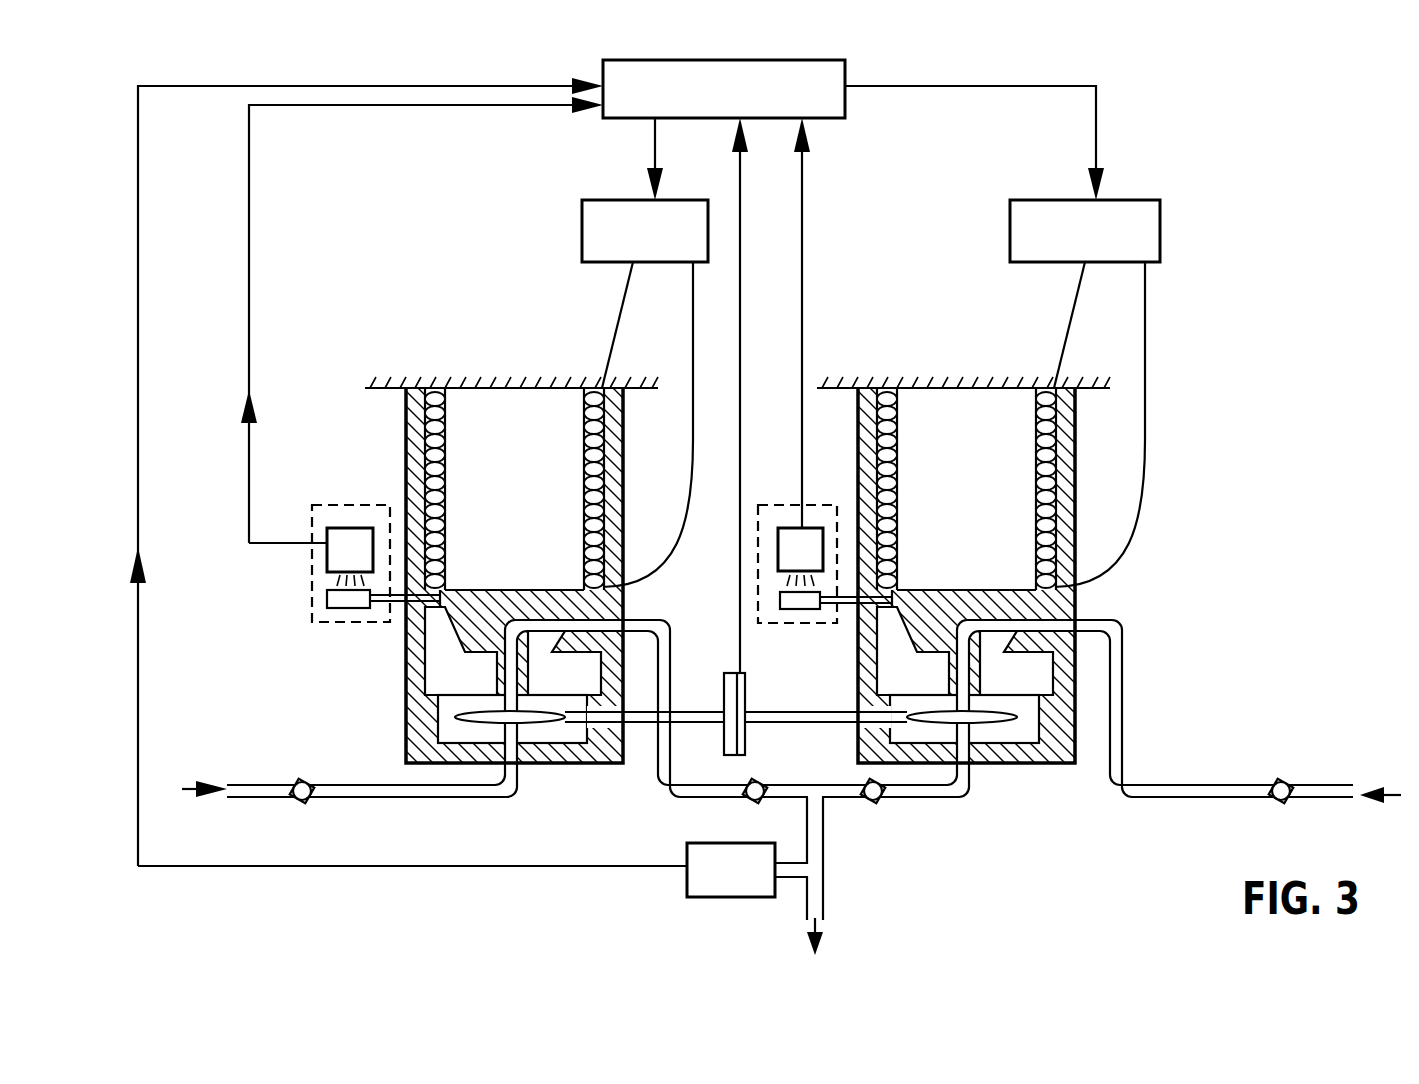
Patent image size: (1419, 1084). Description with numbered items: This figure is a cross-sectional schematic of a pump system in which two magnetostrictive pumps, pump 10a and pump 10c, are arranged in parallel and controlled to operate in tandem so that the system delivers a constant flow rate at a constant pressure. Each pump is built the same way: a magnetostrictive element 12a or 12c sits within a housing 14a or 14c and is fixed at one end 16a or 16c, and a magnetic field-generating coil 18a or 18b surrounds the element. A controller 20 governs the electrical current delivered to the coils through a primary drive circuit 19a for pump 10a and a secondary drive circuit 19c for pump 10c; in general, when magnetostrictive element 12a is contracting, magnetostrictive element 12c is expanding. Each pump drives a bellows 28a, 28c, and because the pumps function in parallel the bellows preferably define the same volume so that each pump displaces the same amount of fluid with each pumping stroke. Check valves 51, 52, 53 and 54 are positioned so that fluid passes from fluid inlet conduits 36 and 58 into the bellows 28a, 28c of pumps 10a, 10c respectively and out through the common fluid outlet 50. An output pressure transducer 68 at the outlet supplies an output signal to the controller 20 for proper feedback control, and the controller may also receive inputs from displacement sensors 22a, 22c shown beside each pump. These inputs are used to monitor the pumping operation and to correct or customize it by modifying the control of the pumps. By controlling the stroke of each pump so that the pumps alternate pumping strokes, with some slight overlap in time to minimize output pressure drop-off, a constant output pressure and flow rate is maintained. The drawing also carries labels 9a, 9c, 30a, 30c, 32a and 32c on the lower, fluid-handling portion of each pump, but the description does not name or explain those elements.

The controller 20 is at (845, 100).
The primary drive circuit 19a is at (582, 238).
The secondary drive circuit 19c is at (1010, 228).
The pump 10a is at (378, 466).
The pump 10c is at (1197, 478).
The magnetostrictive element 12a is at (533, 502).
The magnetostrictive element 12c is at (966, 490).
The housing 14a is at (565, 597).
The housing 14c is at (948, 599).
The fixed end 16a is at (455, 385).
The fixed end 16c is at (963, 362).
The magnetic field-generating coil 18a is at (623, 429).
The magnetic field-generating coil 18b is at (1003, 490).
The displacement sensor 22a is at (321, 622).
The displacement sensor 22c is at (790, 623).
The first inlet chamber 9a is at (461, 651).
The second inlet chamber 9c is at (913, 651).
The first outlet chamber 30a is at (580, 712).
The second outlet chamber 30c is at (1016, 671).
The bellows 28a is at (525, 735).
The bellows 28c is at (1027, 715).
The first outlet pipe 32a is at (578, 740).
The second outlet pipe 32c is at (1087, 711).
The fluid inlet conduit 36 is at (268, 785).
The fluid inlet conduit 58 is at (1316, 795).
The fluid outlet 50 is at (823, 889).
The check valve 51 is at (310, 800).
The check valve 52 is at (760, 801).
The check valve 53 is at (878, 802).
The check valve 54 is at (1276, 803).
The output pressure transducer 68 is at (688, 849).